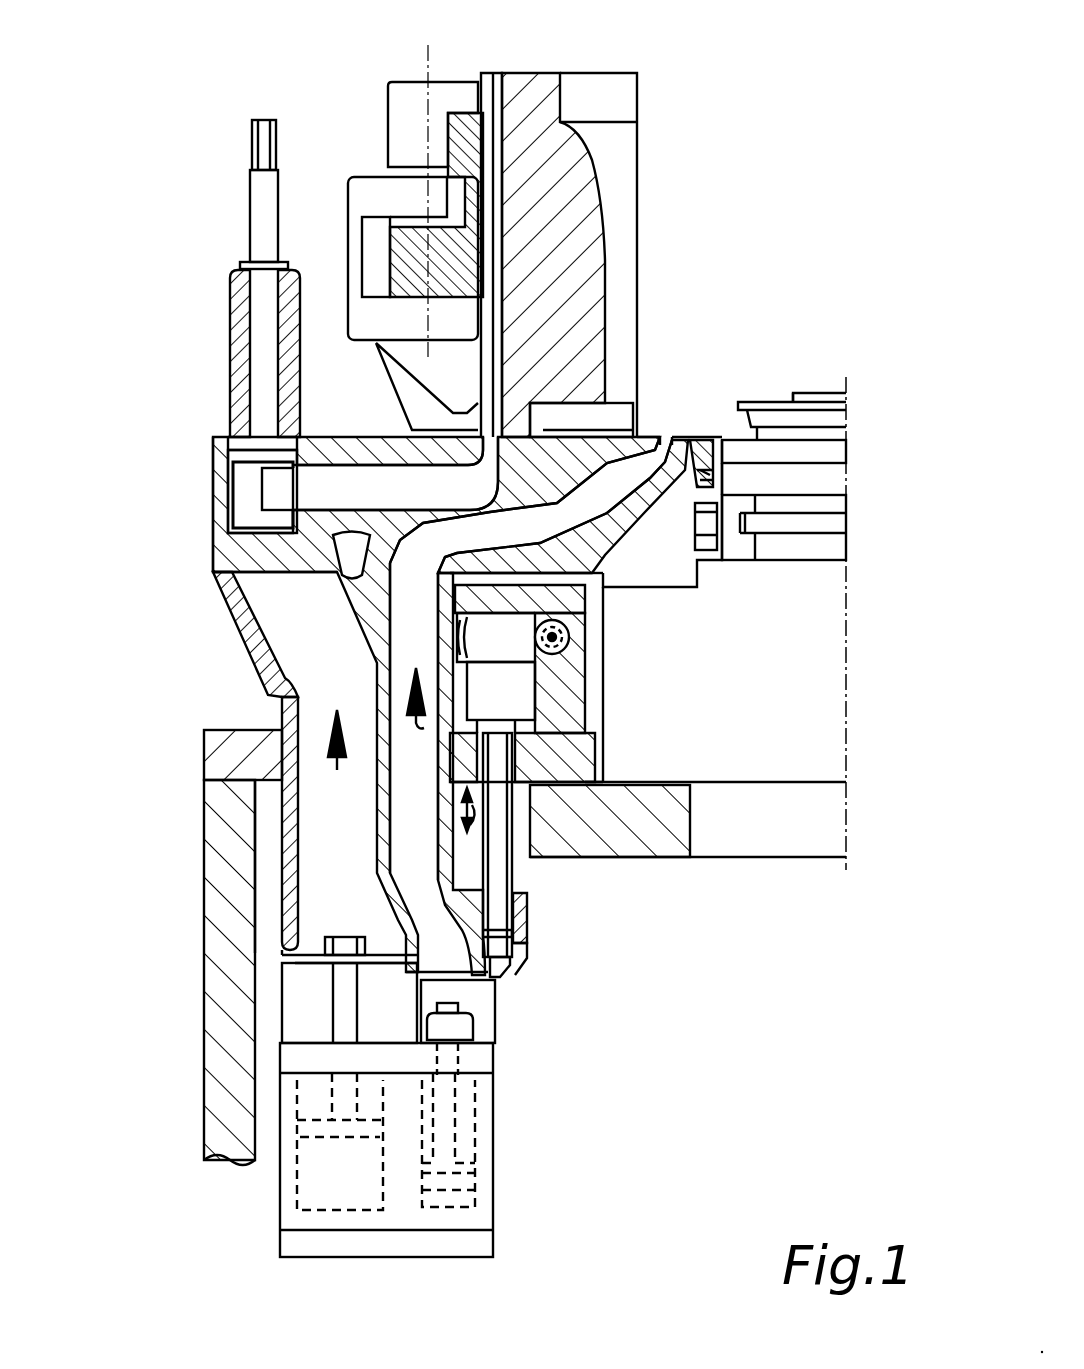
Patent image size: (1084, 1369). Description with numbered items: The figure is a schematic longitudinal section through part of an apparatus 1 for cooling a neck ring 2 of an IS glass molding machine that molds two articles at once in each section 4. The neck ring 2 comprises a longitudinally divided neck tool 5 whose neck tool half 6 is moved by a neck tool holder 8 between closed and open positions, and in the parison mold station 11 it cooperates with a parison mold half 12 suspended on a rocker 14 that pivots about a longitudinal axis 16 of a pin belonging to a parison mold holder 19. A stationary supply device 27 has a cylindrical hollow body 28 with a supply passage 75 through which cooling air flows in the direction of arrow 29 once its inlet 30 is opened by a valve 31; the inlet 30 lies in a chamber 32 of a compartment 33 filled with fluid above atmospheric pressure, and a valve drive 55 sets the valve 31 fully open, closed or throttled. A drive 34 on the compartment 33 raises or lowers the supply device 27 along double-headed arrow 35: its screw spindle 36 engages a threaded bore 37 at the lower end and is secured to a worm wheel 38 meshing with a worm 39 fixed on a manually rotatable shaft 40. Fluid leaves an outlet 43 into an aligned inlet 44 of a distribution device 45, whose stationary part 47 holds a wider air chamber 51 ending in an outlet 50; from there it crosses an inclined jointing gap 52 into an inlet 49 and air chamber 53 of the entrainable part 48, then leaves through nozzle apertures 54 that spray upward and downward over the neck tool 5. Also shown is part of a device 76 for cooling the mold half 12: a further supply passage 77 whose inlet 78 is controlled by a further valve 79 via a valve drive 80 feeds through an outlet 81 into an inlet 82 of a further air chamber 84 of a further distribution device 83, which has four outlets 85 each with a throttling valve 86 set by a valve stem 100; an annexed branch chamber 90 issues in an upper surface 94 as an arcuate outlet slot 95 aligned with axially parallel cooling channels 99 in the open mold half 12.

The apparatus 1 is at (722, 312).
The neck ring 2 is at (830, 378).
The section 4 is at (150, 698).
The neck tool 5 is at (858, 454).
The neck tool half 6 is at (760, 402).
The neck tool holder 8 is at (712, 552).
The parison mold station 11 is at (850, 282).
The parison mold half 12 is at (520, 73).
The rocker 14 is at (390, 240).
The longitudinal axis 16 is at (428, 70).
The parison mold holder 19 is at (348, 177).
The stationary supply device 27 is at (255, 895).
The cylindrical hollow body 28 is at (275, 787).
The arrow 29 is at (537, 686).
The inlet 30 is at (485, 980).
The valve 31 is at (475, 1022).
The chamber 32 is at (250, 912).
The compartment 33 is at (258, 855).
The drive 34 is at (603, 707).
The double-headed arrow 35 is at (466, 830).
The screw spindle 36 is at (512, 878).
The threaded bore 37 is at (512, 968).
The worm wheel 38 is at (457, 630).
The worm 39 is at (603, 668).
The shaft 40 is at (603, 640).
The outlet 43 is at (425, 565).
The inlet 44 is at (396, 578).
The distribution device 45 is at (618, 572).
The stationary part 47 is at (650, 437).
The entrainable part 48 is at (695, 480).
The inlet 49 is at (652, 500).
The outlet 50 is at (692, 450).
The air chamber 51 is at (548, 572).
The jointing gap 52 is at (668, 440).
The air chamber 53 is at (697, 575).
The nozzle apertures 54 is at (712, 470).
The valve drive 55 is at (495, 1170).
The supply passage 75 is at (380, 862).
The device for cooling the parison mold halves 76 is at (198, 316).
The further supply passage 77 is at (283, 690).
The inlet 78 is at (283, 962).
The further valve 79 is at (300, 1005).
The valve drive 80 is at (297, 1172).
The outlet 81 is at (213, 552).
The inlet 82 is at (240, 592).
The further distribution device 83 is at (198, 422).
The further air chamber 84 is at (270, 574).
The outlets 85 is at (300, 574).
The throttling valve 86 is at (243, 457).
The branch chamber 90 is at (372, 440).
The upper surface 94 is at (318, 437).
The outlet slot 95 is at (487, 475).
The cooling channels 99 is at (486, 73).
The valve stem 100 is at (250, 202).